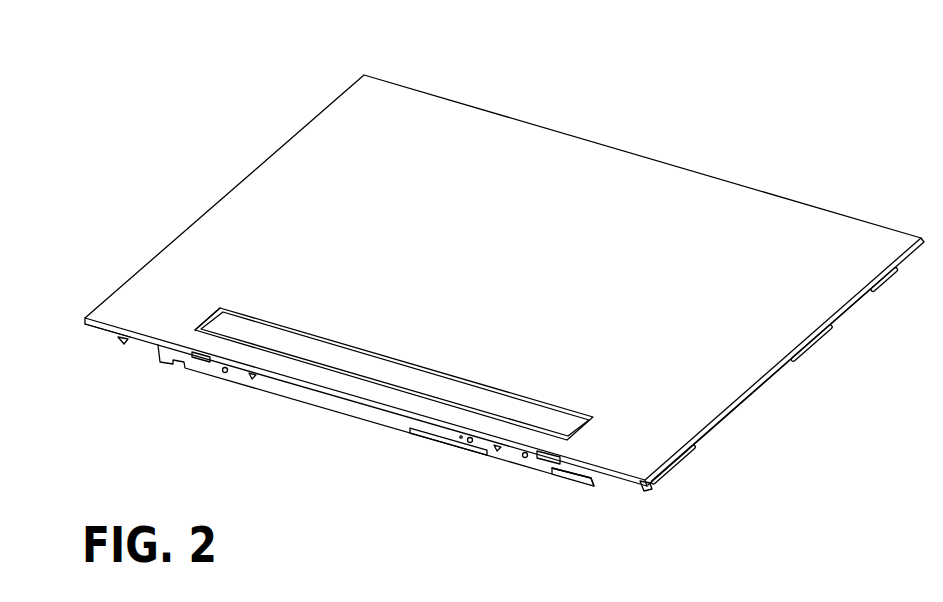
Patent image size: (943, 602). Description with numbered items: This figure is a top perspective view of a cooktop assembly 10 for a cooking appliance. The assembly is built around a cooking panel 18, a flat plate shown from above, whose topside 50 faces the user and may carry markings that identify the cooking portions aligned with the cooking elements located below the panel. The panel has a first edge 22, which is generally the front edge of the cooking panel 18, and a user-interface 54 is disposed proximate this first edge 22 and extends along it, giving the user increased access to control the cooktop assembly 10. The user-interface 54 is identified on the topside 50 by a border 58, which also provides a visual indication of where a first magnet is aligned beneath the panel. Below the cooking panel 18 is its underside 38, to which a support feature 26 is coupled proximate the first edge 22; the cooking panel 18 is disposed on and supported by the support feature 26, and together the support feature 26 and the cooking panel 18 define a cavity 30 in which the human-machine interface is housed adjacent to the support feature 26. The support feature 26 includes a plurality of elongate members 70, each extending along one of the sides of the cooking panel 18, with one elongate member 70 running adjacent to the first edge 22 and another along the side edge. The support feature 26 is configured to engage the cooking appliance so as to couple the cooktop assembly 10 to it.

The cooktop assembly 10 is at (570, 100).
The cooking panel 18 is at (418, 97).
The first edge 22 is at (147, 344).
The support feature 26 is at (598, 496).
The cavity 30 is at (645, 484).
The underside 38 is at (100, 330).
The topside 50 is at (713, 213).
The user-interface 54 is at (232, 327).
The border 58 is at (193, 327).
The elongate member 70 is at (365, 410).